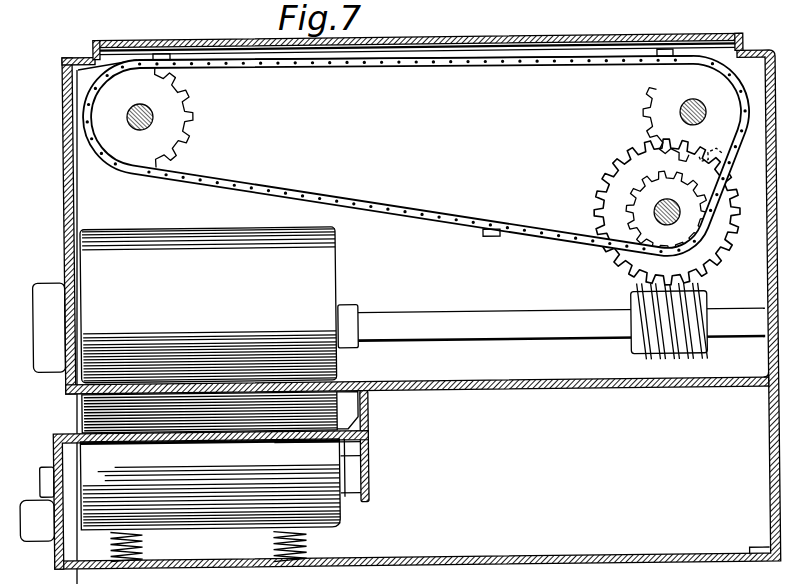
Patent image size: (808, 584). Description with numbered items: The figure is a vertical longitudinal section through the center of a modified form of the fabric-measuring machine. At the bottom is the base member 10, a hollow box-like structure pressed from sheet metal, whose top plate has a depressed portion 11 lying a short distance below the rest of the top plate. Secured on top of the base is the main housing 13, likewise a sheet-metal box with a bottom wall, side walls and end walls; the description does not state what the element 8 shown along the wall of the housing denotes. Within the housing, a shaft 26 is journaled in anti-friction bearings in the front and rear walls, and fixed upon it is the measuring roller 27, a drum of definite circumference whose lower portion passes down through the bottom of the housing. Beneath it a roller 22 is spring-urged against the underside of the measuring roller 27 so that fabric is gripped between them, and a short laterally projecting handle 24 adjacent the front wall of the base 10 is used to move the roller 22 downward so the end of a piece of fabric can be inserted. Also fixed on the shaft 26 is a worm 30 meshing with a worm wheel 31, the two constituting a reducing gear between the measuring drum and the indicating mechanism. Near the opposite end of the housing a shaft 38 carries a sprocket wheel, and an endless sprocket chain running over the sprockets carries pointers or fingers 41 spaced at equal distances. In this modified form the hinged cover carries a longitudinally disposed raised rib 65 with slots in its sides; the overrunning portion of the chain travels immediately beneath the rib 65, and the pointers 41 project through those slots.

The casing side wall 8 is at (141, 61).
The base member 10 is at (765, 490).
The depressed portion of the top plate 11 is at (306, 446).
The main housing 13 is at (416, 159).
The roller 22 is at (210, 501).
The handle 24 is at (33, 527).
The shaft 26 is at (514, 322).
The measuring roller 27 is at (219, 330).
The worm 30 is at (662, 367).
The worm wheel 31 is at (615, 199).
The shaft 38 is at (152, 119).
The pointers or fingers 41 is at (342, 66).
The raised rib 65 is at (205, 44).